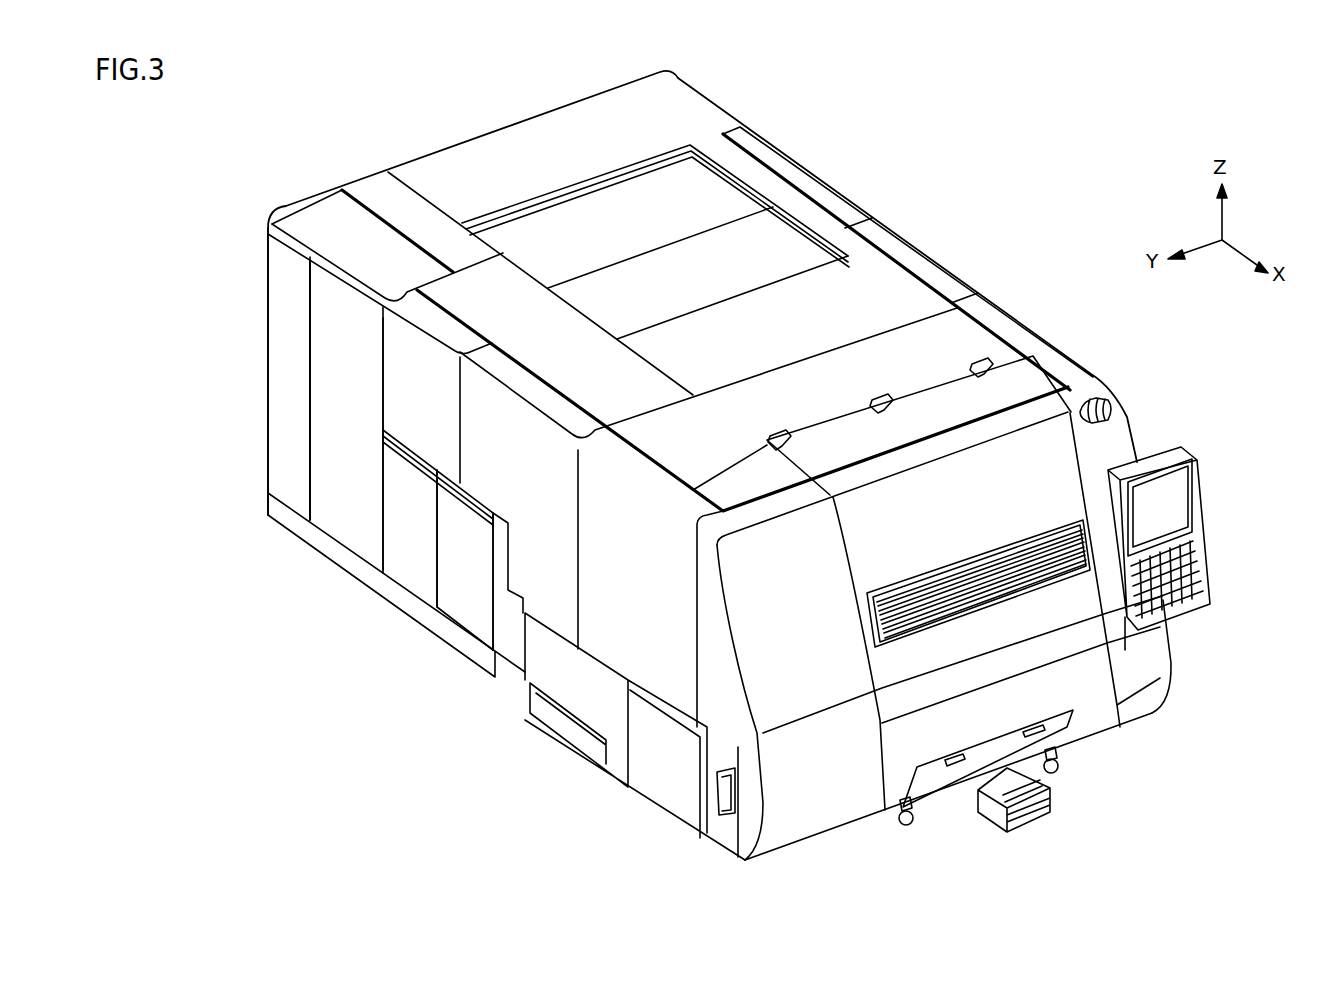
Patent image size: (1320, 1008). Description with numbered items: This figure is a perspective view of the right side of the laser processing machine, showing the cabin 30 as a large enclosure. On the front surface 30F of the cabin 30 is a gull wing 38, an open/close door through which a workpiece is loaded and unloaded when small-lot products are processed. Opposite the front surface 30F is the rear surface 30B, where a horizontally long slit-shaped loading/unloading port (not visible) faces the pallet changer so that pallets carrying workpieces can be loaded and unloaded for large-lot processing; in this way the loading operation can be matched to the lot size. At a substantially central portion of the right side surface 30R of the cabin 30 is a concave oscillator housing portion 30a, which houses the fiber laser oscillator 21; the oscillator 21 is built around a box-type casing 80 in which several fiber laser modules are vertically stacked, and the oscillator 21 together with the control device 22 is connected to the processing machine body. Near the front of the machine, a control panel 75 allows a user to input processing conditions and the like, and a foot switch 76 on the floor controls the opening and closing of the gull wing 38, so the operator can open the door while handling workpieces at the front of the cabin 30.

The cabin 30 is at (853, 189).
The rear surface 30B is at (265, 248).
The right side surface 30R is at (342, 370).
The control device 22 is at (348, 507).
The fiber laser oscillator 21 is at (414, 553).
The casing 80 is at (475, 625).
The oscillator housing portion 30a is at (500, 550).
The front surface 30F is at (780, 612).
The gull wing 38 is at (983, 510).
The control panel 75 is at (1200, 549).
The foot switch 76 is at (983, 812).